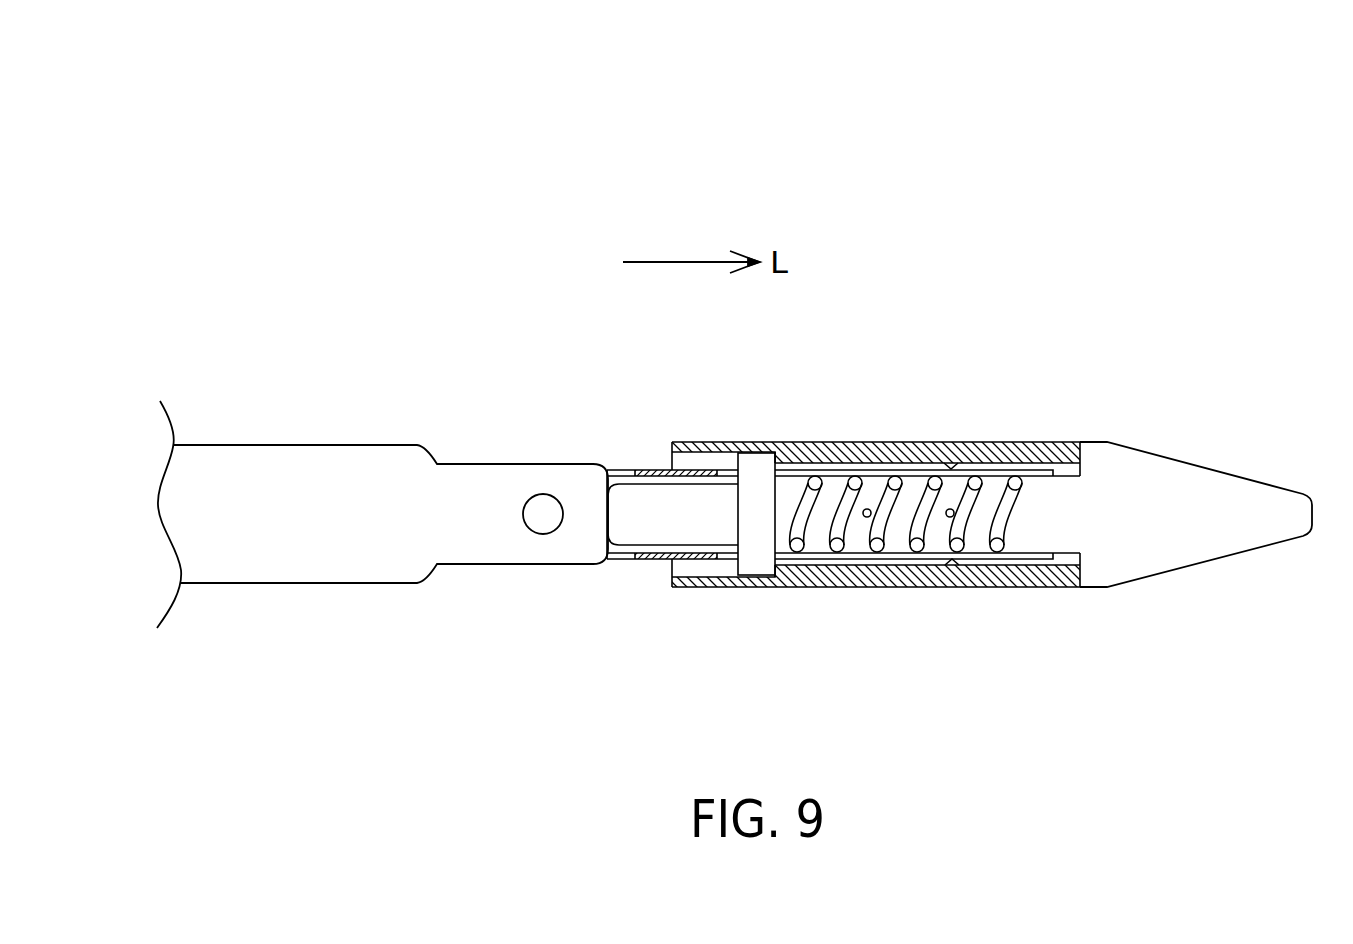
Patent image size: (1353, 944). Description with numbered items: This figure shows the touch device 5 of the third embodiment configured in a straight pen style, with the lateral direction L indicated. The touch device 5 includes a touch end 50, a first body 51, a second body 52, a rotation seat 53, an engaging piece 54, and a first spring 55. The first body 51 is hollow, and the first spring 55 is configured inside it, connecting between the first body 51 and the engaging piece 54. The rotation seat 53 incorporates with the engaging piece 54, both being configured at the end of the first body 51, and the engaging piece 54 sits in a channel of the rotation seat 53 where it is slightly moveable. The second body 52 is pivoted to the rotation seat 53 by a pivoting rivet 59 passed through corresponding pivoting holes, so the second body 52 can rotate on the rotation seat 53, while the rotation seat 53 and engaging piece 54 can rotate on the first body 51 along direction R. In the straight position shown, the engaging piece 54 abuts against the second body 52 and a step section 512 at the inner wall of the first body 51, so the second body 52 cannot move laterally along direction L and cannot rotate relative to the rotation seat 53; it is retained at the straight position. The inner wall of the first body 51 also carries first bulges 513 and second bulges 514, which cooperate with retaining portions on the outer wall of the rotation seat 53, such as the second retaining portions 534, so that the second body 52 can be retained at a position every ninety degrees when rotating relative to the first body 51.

The touch device 5 is at (1121, 138).
The touch end 50 is at (1190, 497).
The first body 51 is at (823, 455).
The step section 512 is at (782, 453).
The first bulges 513 is at (867, 509).
The second bulges 514 is at (950, 517).
The second body 52 is at (275, 485).
The rotation seat 53 is at (655, 556).
The second retaining portions 534 is at (950, 463).
The engaging piece 54 is at (753, 513).
The first spring 55 is at (1003, 530).
The pivoting rivet 59 is at (544, 511).